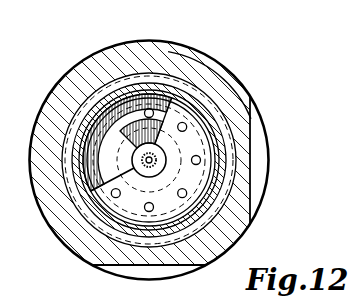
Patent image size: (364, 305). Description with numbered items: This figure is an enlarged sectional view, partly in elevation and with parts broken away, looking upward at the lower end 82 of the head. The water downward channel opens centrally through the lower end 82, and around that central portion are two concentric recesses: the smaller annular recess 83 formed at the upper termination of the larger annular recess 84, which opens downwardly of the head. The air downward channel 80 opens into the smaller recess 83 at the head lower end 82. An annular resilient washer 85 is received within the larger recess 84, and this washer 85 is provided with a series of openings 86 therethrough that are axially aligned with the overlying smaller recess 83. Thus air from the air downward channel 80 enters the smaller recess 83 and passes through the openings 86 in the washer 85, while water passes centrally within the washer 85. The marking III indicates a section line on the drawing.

The air downward channel 80 is at (118, 125).
The lower end 82 is at (155, 51).
The annular recess 83 is at (102, 110).
The larger annular recess 84 is at (85, 132).
The annular resilient washer 85 is at (197, 125).
The openings 86 is at (200, 159).
The section line III- III is at (152, 163).